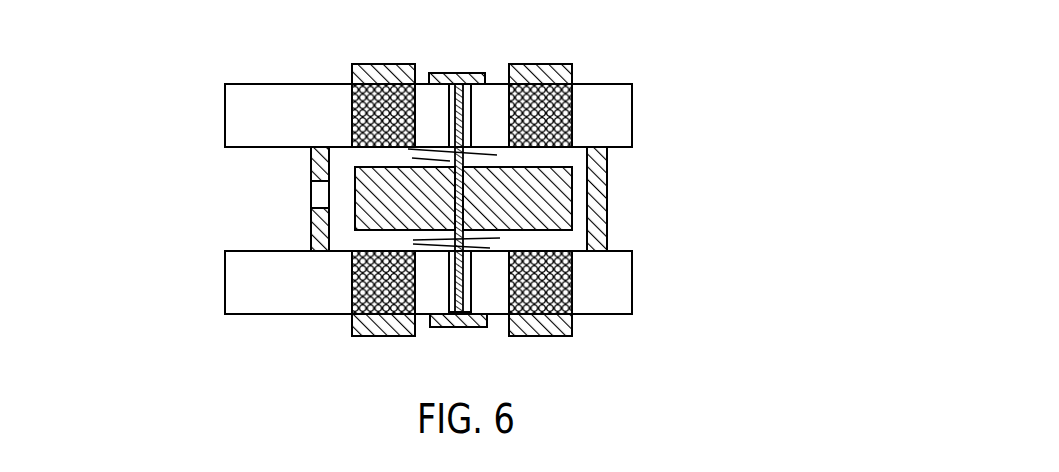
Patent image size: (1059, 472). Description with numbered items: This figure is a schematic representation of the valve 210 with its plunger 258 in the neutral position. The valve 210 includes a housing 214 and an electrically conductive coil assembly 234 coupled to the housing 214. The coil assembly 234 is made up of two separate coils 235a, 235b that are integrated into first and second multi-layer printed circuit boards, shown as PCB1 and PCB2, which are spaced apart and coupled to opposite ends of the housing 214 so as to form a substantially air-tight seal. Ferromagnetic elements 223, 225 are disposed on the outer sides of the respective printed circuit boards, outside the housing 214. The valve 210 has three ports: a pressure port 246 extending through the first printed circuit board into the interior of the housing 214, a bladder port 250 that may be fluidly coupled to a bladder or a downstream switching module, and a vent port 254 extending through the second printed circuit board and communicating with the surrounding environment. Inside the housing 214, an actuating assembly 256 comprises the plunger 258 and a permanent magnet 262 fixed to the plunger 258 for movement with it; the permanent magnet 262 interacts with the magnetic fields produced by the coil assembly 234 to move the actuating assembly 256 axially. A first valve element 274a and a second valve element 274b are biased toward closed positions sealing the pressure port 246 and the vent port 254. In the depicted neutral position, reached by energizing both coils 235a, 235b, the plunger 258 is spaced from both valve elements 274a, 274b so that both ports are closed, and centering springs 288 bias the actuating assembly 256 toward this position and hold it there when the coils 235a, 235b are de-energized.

The valve 210 is at (143, 90).
The housing 214 is at (607, 210).
The ferromagnetic element 223 is at (365, 64).
The ferromagnetic element 225 is at (362, 336).
The coil assembly 234 is at (653, 325).
The first coil 235a is at (572, 112).
The second coil 235b is at (568, 284).
The pressure port 246 is at (478, 100).
The bladder port 250 is at (311, 190).
The vent port 254 is at (455, 287).
The actuating assembly 256 is at (552, 222).
The plunger 258 is at (463, 177).
The permanent magnet 262 is at (353, 209).
The first valve element 274a is at (463, 73).
The second valve element 274b is at (462, 327).
The centering spring 288 is at (417, 231).